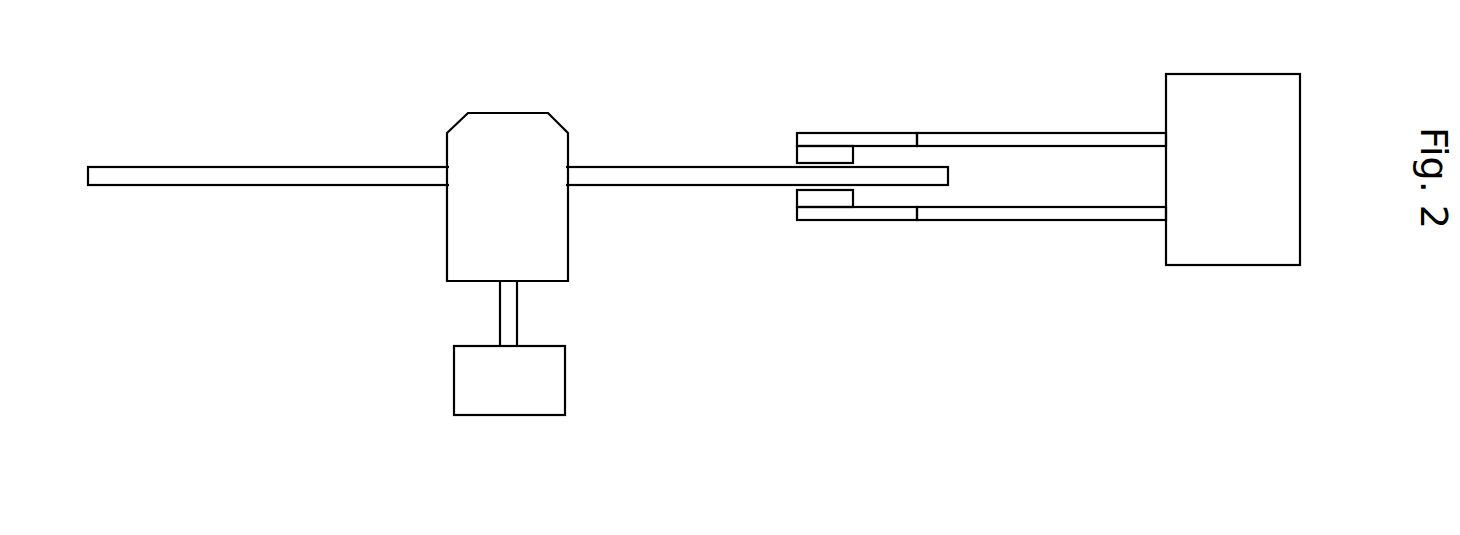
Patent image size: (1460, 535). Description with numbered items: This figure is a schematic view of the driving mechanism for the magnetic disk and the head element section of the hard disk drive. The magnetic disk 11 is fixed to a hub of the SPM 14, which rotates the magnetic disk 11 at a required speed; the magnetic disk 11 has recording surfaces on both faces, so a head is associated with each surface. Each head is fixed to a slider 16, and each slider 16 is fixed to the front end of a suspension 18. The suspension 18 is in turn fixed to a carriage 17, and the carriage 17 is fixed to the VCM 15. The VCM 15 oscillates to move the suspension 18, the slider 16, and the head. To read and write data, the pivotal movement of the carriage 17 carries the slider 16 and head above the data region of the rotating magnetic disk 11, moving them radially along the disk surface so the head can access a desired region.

The magnetic disk 11 is at (296, 167).
The SPM 14 is at (565, 370).
The VCM 15 is at (1280, 74).
The slider 16 is at (797, 150).
The carriage 17 is at (1040, 133).
The suspension 18 is at (905, 133).